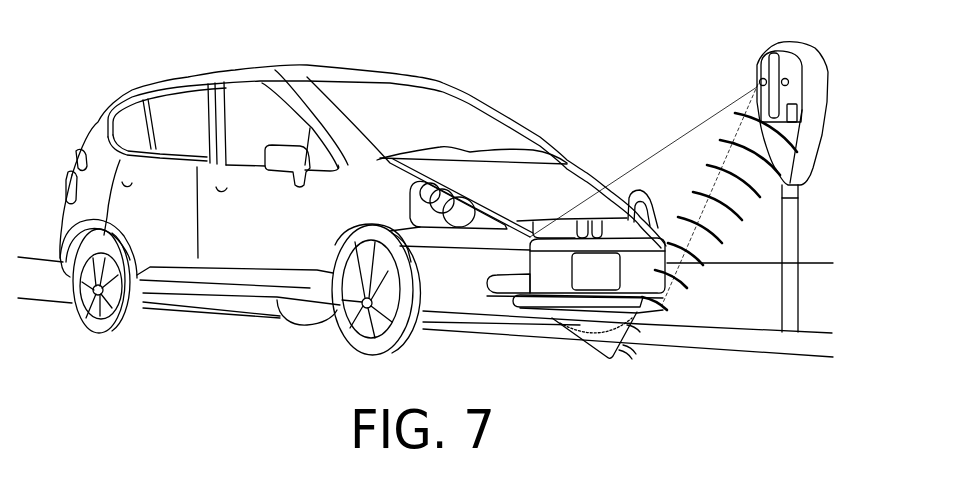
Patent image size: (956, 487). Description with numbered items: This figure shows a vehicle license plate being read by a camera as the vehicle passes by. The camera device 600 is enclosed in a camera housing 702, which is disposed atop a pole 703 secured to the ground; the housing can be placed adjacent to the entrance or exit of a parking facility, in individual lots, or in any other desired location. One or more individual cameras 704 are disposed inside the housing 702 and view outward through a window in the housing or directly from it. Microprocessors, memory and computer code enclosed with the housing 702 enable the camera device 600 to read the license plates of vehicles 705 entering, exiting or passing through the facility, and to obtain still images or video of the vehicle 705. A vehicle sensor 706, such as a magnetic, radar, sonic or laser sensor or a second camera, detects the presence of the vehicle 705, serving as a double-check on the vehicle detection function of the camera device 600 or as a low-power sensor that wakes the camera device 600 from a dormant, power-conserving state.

The camera device 600 is at (765, 176).
The camera housing 702 is at (808, 125).
The pole 703 is at (788, 283).
The camera 704 is at (760, 82).
The vehicle 705 is at (260, 242).
The vehicle sensor 706 is at (613, 358).